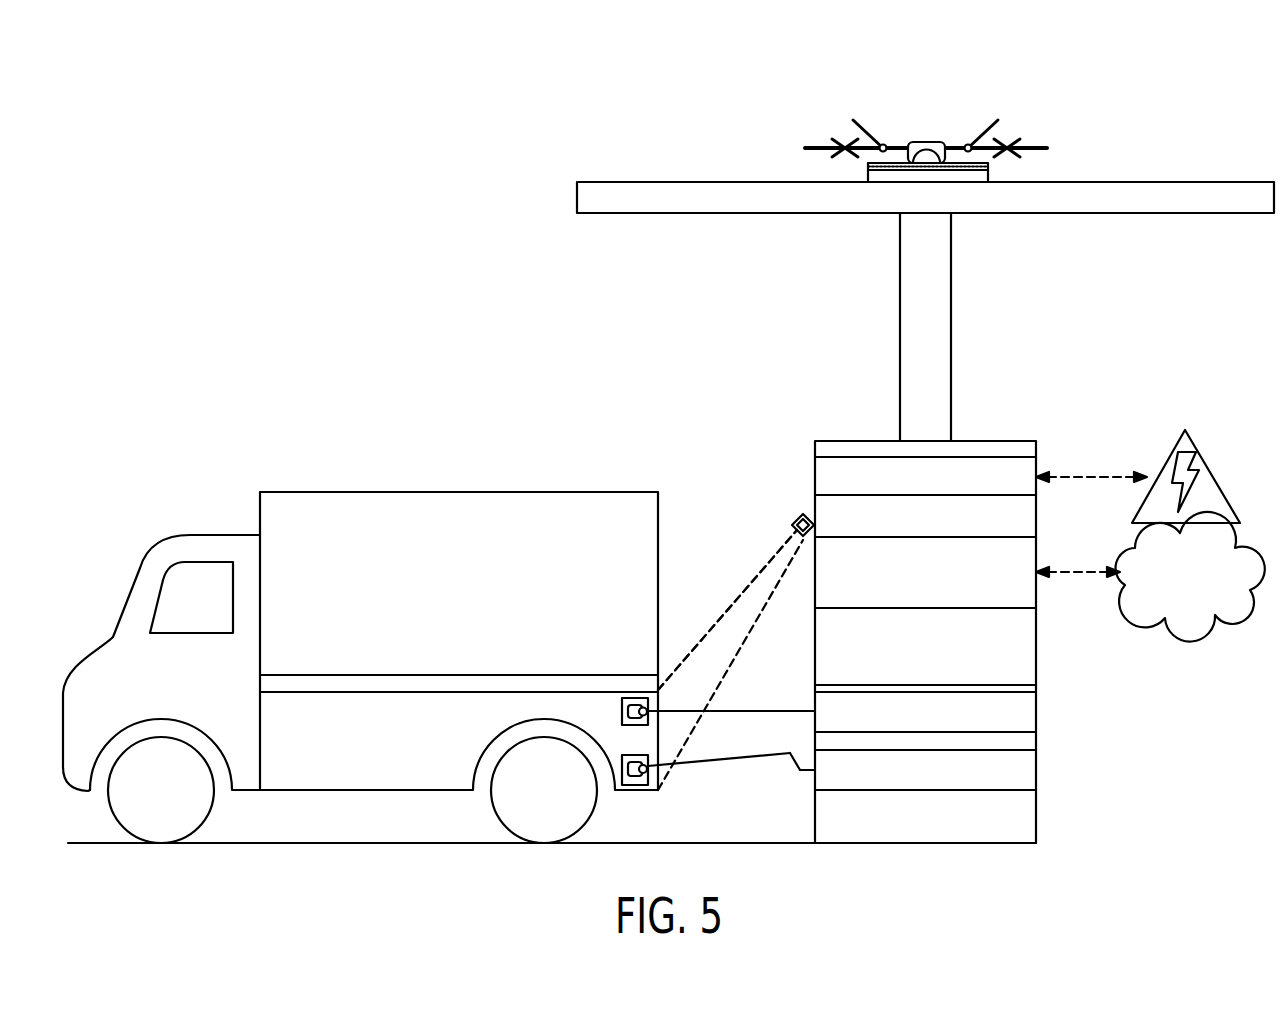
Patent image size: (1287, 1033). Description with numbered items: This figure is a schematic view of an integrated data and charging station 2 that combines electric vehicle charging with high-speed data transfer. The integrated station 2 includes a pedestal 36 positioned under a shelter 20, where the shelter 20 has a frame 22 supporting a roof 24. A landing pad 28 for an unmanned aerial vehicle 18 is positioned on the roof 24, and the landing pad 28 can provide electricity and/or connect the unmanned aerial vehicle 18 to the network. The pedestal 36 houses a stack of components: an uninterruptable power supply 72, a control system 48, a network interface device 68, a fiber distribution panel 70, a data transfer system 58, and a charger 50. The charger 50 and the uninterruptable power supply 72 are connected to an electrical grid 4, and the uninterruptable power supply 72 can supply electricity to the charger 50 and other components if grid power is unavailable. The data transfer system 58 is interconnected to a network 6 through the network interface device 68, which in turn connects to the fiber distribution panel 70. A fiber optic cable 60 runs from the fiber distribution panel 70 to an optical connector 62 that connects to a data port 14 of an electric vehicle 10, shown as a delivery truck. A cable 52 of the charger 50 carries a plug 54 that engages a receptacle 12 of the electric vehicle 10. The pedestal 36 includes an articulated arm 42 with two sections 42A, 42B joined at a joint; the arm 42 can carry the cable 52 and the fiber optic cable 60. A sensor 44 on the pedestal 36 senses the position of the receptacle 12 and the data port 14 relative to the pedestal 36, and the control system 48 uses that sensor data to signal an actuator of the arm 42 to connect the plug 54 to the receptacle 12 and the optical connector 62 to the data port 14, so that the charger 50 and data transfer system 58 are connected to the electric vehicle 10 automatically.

The integrated data and charging station 2 is at (362, 106).
The shelter 20 is at (520, 139).
The roof 24 is at (652, 180).
The frame 22 is at (900, 275).
The unmanned aerial vehicle 18 is at (923, 145).
The landing pad 28 is at (985, 175).
The electric vehicle 10 is at (203, 481).
The data port 14 is at (622, 708).
The optical connector 62 is at (633, 705).
The receptacle 12 is at (625, 765).
The plug 54 is at (635, 780).
The fiber optic cable 60 is at (757, 710).
The arm 42 is at (720, 757).
The cable 52 is at (727, 610).
The arm section 42A is at (728, 760).
The arm section 42B is at (790, 760).
The sensor 44 is at (797, 517).
The pedestal 36 is at (1017, 402).
The uninterruptable power supply 72 is at (825, 475).
The control system 48 is at (1036, 515).
The network interface device 68 is at (1036, 560).
The fiber distribution panel 70 is at (1036, 648).
The data transfer system 58 is at (1036, 710).
The charger 50 is at (1036, 770).
The electrical grid 4 is at (1215, 470).
The network 6 is at (1225, 610).